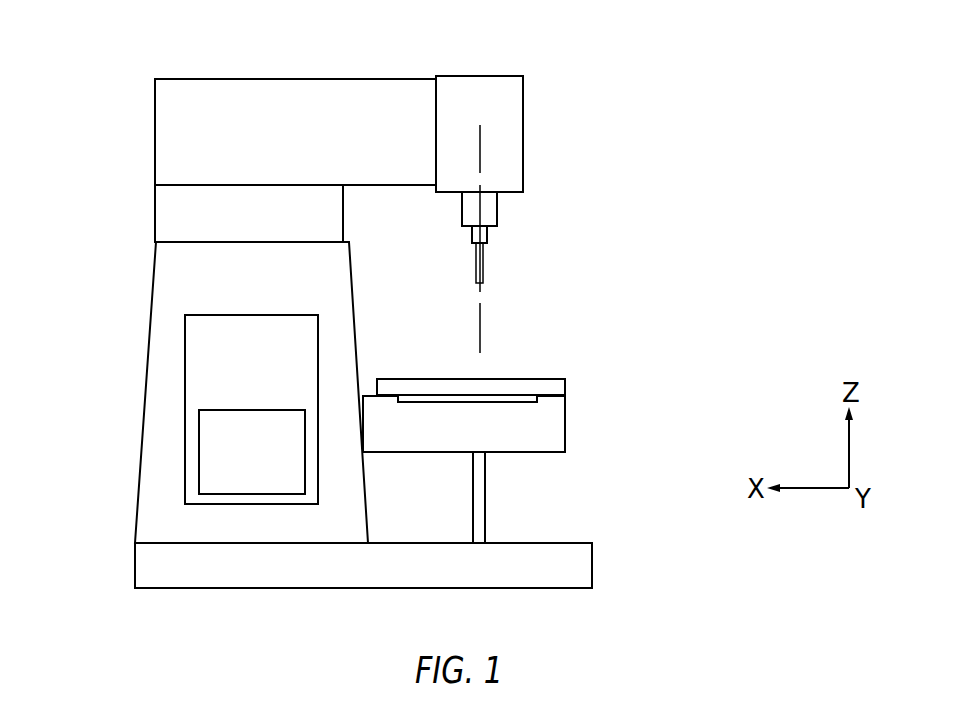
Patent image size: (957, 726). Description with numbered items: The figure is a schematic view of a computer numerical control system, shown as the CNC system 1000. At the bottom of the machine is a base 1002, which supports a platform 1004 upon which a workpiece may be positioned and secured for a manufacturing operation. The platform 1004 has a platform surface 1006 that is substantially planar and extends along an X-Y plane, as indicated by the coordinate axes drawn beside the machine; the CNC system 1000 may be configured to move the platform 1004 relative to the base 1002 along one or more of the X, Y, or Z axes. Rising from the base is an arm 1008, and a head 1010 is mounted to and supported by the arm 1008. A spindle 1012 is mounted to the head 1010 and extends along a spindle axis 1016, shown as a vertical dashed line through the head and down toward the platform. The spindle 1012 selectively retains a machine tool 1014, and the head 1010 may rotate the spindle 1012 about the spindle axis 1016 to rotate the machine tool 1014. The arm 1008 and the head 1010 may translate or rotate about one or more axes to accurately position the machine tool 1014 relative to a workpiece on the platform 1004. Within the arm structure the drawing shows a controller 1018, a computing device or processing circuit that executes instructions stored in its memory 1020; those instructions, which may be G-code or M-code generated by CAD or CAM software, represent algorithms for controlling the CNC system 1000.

The CNC system 1000 is at (718, 97).
The base 1002 is at (577, 563).
The platform 1004 is at (558, 386).
The platform surface 1006 is at (532, 378).
The arm 1008 is at (381, 155).
The head 1010 is at (510, 85).
The spindle 1012 is at (485, 234).
The machine tool 1014 is at (482, 252).
The spindle axis 1016 is at (480, 133).
The controller 1018 is at (185, 366).
The memory 1020 is at (199, 447).